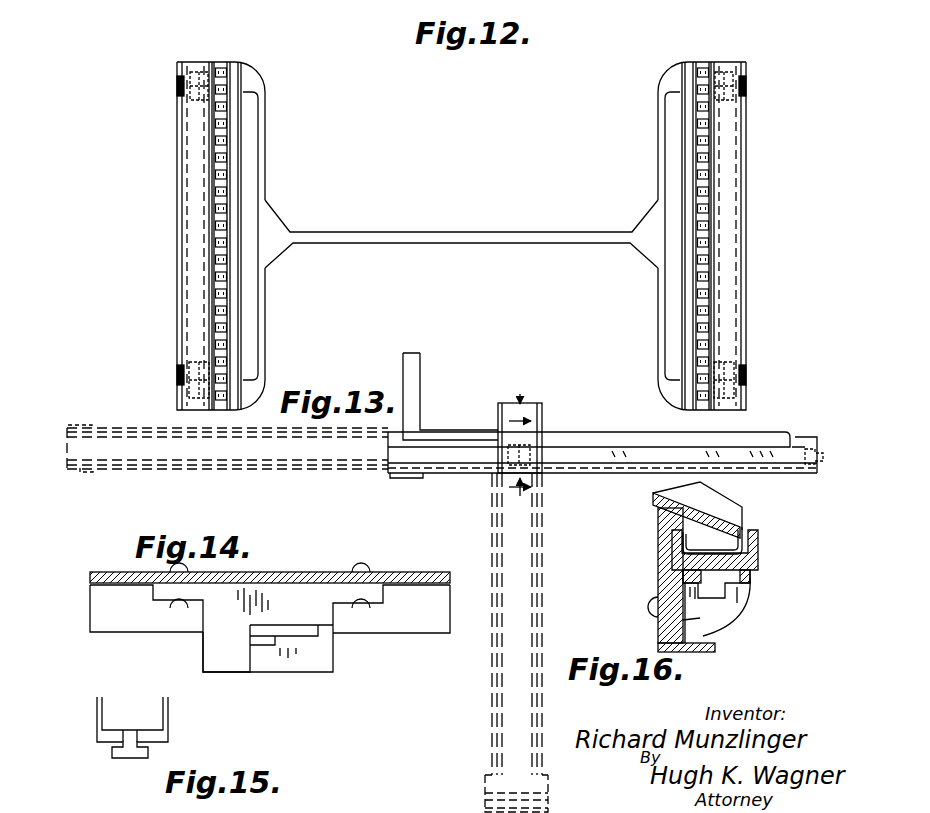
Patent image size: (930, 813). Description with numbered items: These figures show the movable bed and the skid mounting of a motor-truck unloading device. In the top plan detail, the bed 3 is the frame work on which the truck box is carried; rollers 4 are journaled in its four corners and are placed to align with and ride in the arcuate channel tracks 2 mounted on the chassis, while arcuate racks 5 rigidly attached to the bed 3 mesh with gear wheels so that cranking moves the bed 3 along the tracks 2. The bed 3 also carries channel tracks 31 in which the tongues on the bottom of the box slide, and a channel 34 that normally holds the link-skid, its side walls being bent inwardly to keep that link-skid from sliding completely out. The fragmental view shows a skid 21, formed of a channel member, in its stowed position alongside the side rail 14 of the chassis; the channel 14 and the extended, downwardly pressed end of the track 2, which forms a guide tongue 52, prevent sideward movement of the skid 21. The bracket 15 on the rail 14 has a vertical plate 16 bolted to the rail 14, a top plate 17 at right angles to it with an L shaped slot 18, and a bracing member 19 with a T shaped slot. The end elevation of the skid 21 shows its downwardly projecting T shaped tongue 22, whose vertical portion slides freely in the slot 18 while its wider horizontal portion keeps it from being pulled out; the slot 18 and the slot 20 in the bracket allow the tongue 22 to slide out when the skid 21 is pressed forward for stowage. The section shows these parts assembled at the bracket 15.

In FIG. 13, the arcuate channel track 2 is at (544, 406).
In FIG. 16, the arcuate channel track 2 is at (713, 500).
In FIG. 12, the bed 3 is at (272, 226).
In FIG. 12, the roller 4 is at (203, 66).
In FIG. 12, the arcuate rack 5 is at (227, 180).
In FIG. 13, the side rail 14 is at (603, 433).
In FIG. 14, the side rail 14 is at (413, 586).
In FIG. 16, the side rail 14 is at (660, 553).
In FIG. 14, the bracket 15 is at (307, 592).
In FIG. 16, the bracket 15 is at (749, 606).
In FIG. 13, the vertical plate 16 is at (520, 446).
In FIG. 16, the vertical plate 16 is at (680, 619).
In FIG. 14, the top plate 17 is at (215, 650).
In FIG. 16, the top plate 17 is at (750, 579).
In FIG. 14, the L shaped slot 18 is at (265, 655).
In FIG. 16, the bracing member 19 is at (703, 632).
In FIG. 16, the slot 20 is at (658, 580).
In FIG. 13, the skid 21 is at (307, 470).
In FIG. 15, the skid 21 is at (103, 714).
In FIG. 16, the skid 21 is at (758, 558).
In FIG. 13, the T shaped tongue 22 is at (823, 457).
In FIG. 15, the T shaped tongue 22 is at (129, 730).
In FIG. 12, the channel track 31 is at (188, 256).
In FIG. 12, the channel 34 is at (228, 318).
In FIG. 16, the guide tongue 52 is at (745, 533).